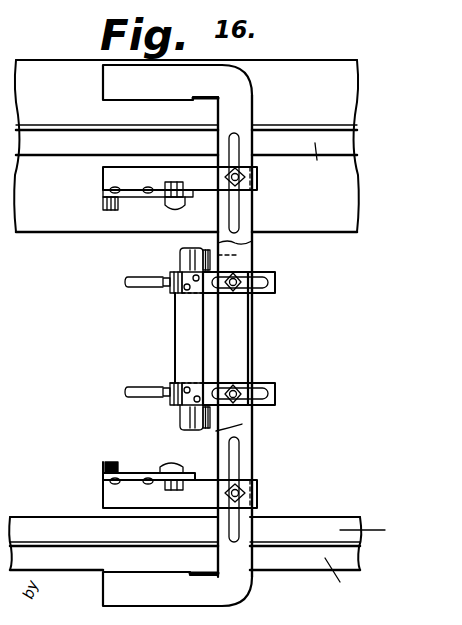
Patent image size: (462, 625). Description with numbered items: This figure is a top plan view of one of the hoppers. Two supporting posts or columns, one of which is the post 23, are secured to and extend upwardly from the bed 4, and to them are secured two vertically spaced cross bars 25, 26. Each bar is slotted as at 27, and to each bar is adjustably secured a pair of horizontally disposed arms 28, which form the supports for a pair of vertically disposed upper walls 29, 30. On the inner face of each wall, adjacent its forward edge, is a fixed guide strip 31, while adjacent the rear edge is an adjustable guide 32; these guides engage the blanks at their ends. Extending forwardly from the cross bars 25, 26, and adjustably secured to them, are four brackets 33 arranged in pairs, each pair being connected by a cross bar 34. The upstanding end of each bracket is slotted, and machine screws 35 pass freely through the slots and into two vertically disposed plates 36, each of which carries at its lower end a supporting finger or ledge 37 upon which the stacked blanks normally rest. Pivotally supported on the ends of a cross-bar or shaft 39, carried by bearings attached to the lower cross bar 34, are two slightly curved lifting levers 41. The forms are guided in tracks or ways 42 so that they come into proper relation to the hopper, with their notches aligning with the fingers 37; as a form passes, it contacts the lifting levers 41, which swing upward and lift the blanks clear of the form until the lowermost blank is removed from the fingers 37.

The bed 4 is at (186, 146).
The supporting post 23 is at (150, 100).
The cross bar 25 is at (240, 345).
The cross bar 26 is at (258, 122).
The slot 27 is at (250, 206).
The horizontally disposed arm 28 is at (108, 175).
The upper wall 29 is at (140, 197).
The upper wall 30 is at (130, 473).
The fixed guide strip 31 is at (104, 205).
The adjustable guide 32 is at (178, 204).
The bracket 33 is at (265, 294).
The cross bar 34 is at (182, 334).
The machine screw 35 is at (185, 294).
The vertically disposed plate 36 is at (170, 277).
The supporting finger 37 is at (152, 288).
The cross-bar or shaft 39 is at (184, 431).
The lifting lever 41 is at (210, 258).
The track or way 42 is at (325, 162).